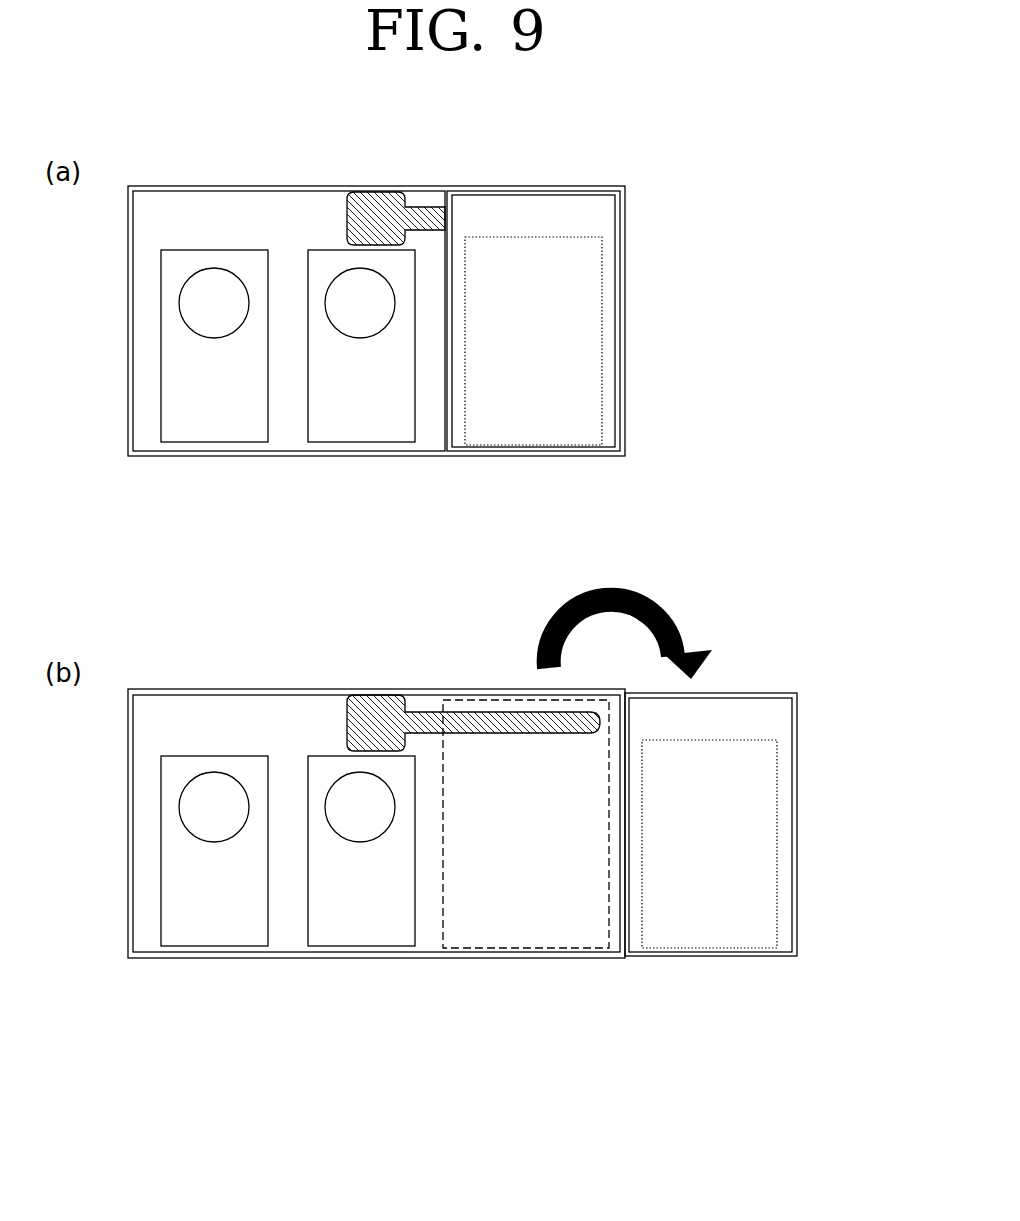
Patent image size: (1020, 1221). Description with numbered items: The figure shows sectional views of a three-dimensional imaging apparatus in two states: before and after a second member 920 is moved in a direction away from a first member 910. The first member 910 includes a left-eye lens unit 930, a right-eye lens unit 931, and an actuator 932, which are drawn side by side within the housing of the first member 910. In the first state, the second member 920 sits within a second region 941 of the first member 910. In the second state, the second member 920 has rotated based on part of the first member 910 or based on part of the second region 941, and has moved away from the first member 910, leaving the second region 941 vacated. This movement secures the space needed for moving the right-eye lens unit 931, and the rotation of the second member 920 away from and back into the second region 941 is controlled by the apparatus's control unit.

The first member 910 is at (283, 186).
The second member 920 is at (593, 218).
The left-eye lens unit 930 is at (215, 413).
The right-eye lens unit 931 is at (357, 413).
The actuator 932 is at (373, 200).
The second region 941 is at (540, 948).